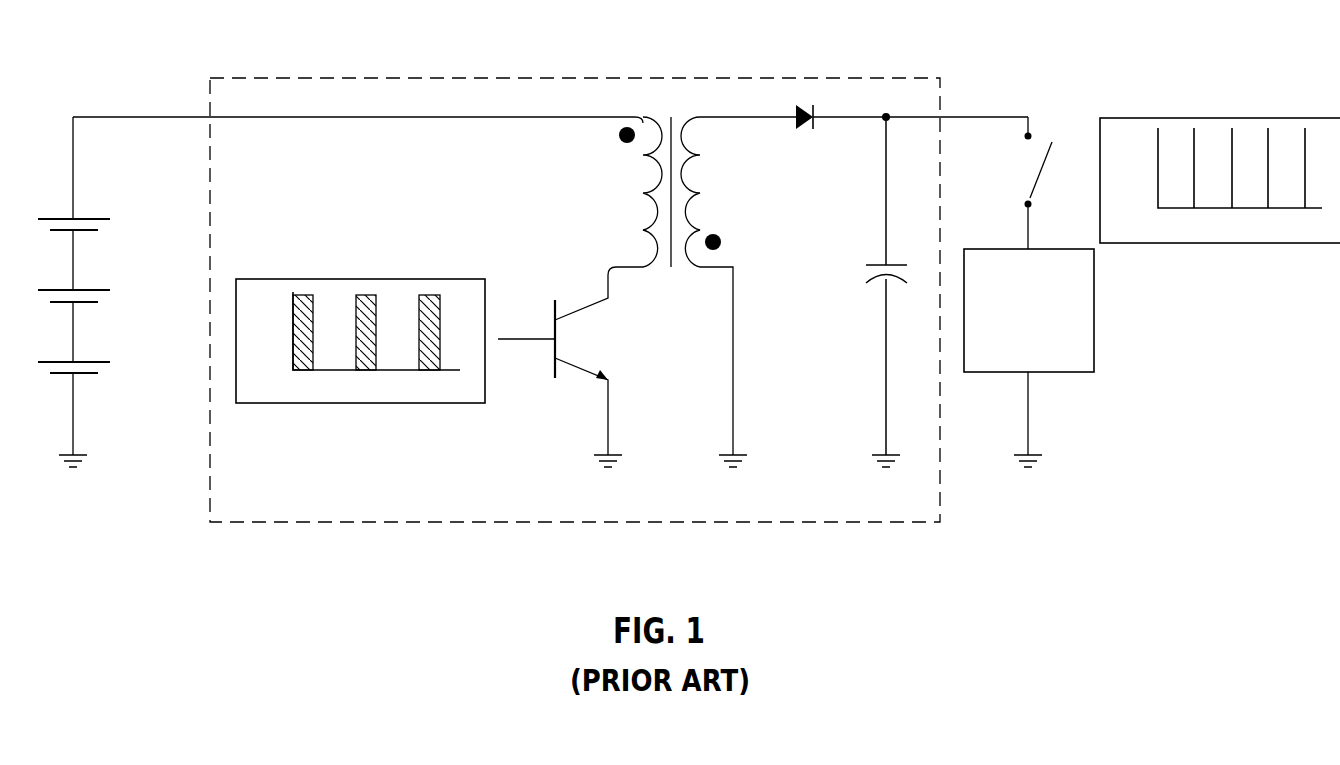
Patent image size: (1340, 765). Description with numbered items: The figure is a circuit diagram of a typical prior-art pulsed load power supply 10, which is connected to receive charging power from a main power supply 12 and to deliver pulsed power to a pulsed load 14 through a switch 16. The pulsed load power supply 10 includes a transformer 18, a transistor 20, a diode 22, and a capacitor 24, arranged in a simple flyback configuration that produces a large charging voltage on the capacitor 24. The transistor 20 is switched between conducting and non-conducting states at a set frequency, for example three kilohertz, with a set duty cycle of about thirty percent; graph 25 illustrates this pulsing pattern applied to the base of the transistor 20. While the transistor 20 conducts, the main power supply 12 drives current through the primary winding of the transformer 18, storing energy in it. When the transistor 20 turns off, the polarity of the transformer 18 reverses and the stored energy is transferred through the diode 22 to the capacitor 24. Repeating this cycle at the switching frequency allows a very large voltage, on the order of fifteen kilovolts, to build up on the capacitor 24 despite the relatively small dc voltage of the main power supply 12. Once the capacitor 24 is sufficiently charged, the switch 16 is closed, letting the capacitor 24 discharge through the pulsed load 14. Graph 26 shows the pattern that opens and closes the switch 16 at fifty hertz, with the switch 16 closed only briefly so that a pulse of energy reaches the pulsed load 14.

The pulsed load power supply 10 is at (578, 75).
The main power supply 12 is at (90, 290).
The pulsed load 14 is at (1094, 313).
The switch 16 is at (1055, 148).
The transformer 18 is at (622, 165).
The transistor 20 is at (555, 310).
The diode 22 is at (803, 127).
The capacitor 24 is at (873, 263).
The graph 25 is at (1225, 117).
The graph 26 is at (358, 278).